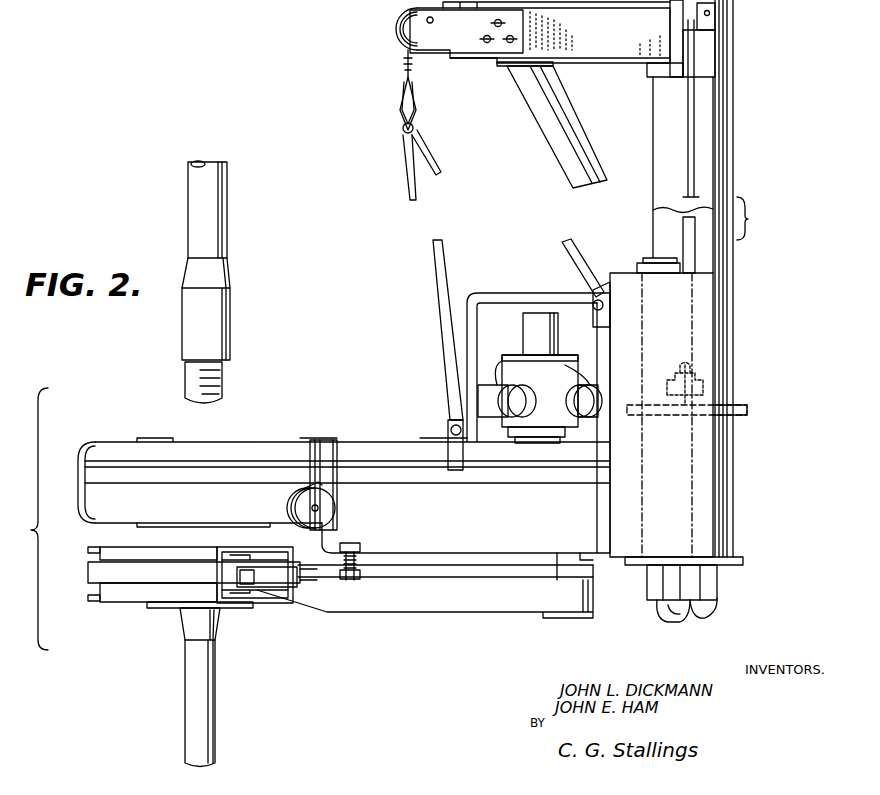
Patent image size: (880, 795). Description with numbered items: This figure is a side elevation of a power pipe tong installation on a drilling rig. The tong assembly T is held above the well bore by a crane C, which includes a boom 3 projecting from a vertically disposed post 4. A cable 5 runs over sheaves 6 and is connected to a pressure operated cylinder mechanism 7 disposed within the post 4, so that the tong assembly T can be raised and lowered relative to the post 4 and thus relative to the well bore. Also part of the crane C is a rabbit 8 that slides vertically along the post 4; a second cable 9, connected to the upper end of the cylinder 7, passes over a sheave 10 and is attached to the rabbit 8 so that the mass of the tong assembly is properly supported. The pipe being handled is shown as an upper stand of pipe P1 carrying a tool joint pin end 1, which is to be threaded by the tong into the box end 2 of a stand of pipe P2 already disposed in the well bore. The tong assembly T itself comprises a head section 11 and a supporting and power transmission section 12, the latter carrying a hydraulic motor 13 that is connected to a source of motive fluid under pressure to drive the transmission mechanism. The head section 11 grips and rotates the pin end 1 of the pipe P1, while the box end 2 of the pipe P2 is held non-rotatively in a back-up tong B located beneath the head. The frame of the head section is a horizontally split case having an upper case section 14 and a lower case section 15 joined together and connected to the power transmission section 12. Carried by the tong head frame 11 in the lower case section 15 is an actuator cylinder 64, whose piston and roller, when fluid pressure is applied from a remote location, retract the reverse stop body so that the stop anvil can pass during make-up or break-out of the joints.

The tool joint pin end 1 is at (231, 323).
The box end 2 is at (180, 610).
The boom 3 is at (578, 56).
The post 4 is at (730, 92).
The cable 5 is at (405, 60).
The sheaves 6 is at (405, 22).
The pressure operated cylinder mechanism 7 is at (658, 614).
The rabbit 8 is at (731, 472).
The second cable 9 is at (695, 146).
The sheave 10 is at (703, 18).
The head section 11 is at (110, 442).
The supporting and power transmission section 12 is at (584, 551).
The hydraulic motor 13 is at (515, 356).
The upper case section 14 is at (90, 447).
The lower case section 15 is at (90, 497).
The actuator cylinder 64 is at (319, 509).
The upper stand of pipe P1 is at (227, 202).
The stand of pipe in the well bore P2 is at (217, 690).
The back-up tong B is at (116, 601).
The crane C is at (640, 65).
The tong assembly T is at (394, 444).